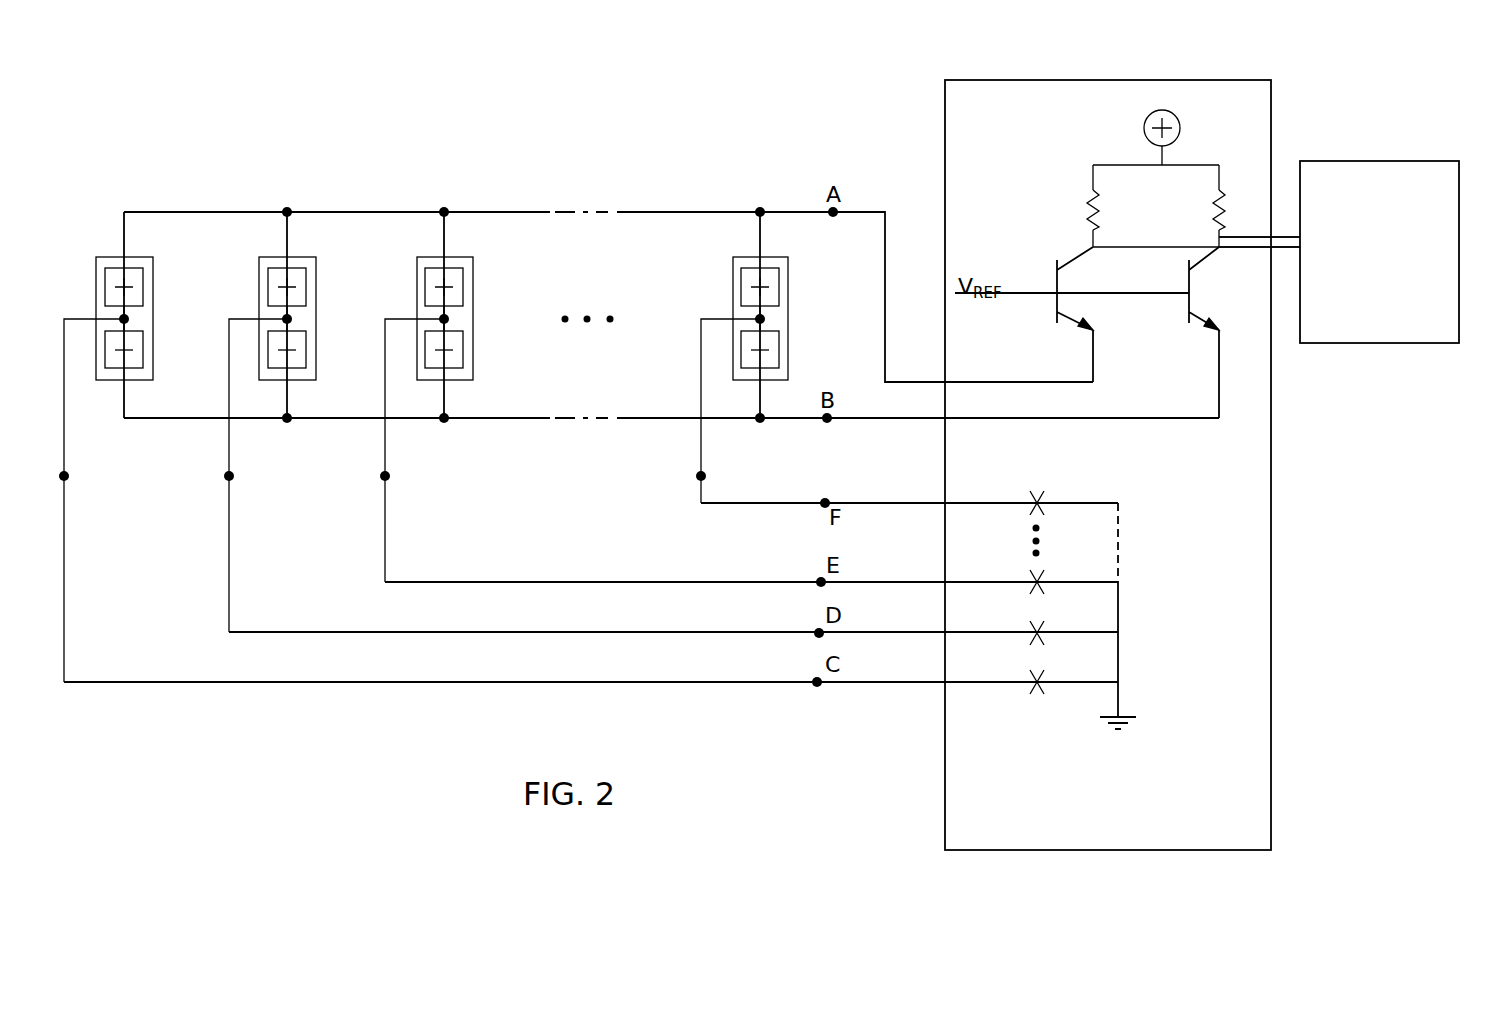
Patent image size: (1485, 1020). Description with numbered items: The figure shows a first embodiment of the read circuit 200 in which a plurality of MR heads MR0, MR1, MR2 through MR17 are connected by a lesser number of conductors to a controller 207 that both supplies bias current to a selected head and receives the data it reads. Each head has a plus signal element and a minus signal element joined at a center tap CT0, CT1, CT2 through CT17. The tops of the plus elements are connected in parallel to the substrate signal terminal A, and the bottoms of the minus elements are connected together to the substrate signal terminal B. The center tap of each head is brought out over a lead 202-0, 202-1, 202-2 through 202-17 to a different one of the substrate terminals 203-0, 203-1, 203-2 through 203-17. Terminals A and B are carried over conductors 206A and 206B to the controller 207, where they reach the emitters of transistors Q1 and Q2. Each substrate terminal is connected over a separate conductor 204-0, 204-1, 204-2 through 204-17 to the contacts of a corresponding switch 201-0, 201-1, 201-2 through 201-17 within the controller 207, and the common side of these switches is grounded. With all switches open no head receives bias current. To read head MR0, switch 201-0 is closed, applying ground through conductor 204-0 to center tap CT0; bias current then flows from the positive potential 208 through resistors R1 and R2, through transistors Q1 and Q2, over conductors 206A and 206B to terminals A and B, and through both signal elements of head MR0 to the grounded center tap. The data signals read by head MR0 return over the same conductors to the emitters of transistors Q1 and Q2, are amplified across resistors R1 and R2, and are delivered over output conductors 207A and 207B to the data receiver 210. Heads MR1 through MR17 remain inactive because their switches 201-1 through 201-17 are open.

The data acquisition circuit 200 is at (220, 150).
The conductor from cell 0 junction 202-0 is at (72, 319).
The conductor from cell 1 junction 202-1 is at (229, 440).
The conductor from cell 2 junction 202-2 is at (385, 440).
The conductor from cell 17 junction 202-17 is at (701, 455).
The substrate terminal 203-0 is at (64, 476).
The substrate terminal 203-1 is at (229, 476).
The substrate terminal 203-2 is at (385, 476).
The substrate terminal 203-17 is at (701, 477).
The conductor 204-0 is at (428, 682).
The conductor 204-1 is at (555, 632).
The conductor 204-2 is at (674, 582).
The conductor 204-17 is at (733, 503).
The switch 201-0 is at (1040, 680).
The switch 201-1 is at (1040, 630).
The switch 201-2 is at (1040, 580).
The switch 201-17 is at (1040, 500).
The conductor 206A is at (1058, 382).
The conductor 206B is at (1082, 418).
The controller 207 is at (1152, 64).
The output conductor 207A is at (1258, 235).
The output conductor 207B is at (1258, 250).
The positive potential 208 is at (1143, 128).
The data receiver 210 is at (1359, 350).
The MR head MR0 is at (140, 257).
The MR head MR1 is at (303, 257).
The MR head MR2 is at (465, 257).
The MR head MR17 is at (778, 257).
The center tap CT0 is at (126, 318).
The center tap CT1 is at (289, 318).
The center tap CT2 is at (446, 318).
The center tap CT17 is at (762, 318).
The resistor R1 is at (1110, 210).
The resistor R2 is at (1201, 210).
The transistor Q1 is at (1078, 288).
The transistor Q2 is at (1183, 288).